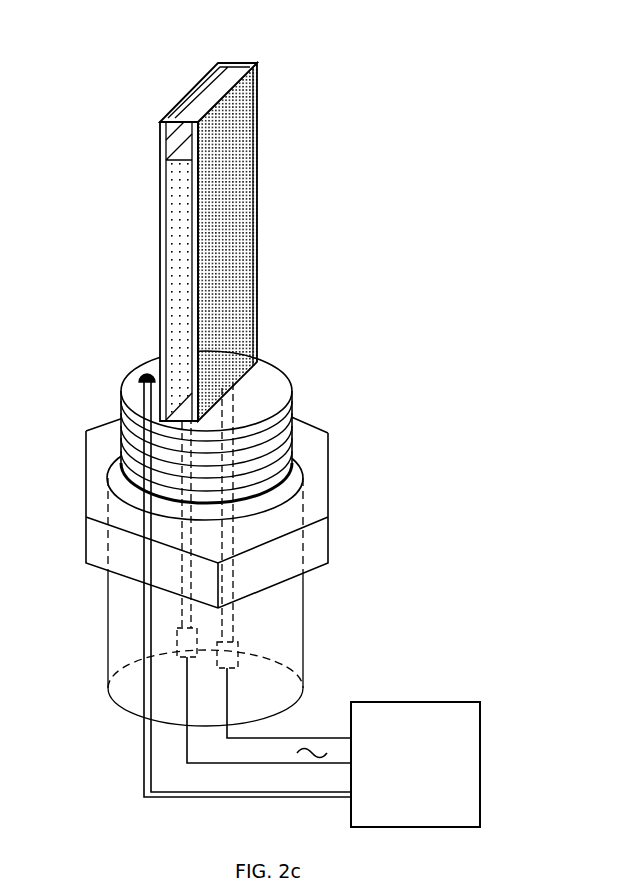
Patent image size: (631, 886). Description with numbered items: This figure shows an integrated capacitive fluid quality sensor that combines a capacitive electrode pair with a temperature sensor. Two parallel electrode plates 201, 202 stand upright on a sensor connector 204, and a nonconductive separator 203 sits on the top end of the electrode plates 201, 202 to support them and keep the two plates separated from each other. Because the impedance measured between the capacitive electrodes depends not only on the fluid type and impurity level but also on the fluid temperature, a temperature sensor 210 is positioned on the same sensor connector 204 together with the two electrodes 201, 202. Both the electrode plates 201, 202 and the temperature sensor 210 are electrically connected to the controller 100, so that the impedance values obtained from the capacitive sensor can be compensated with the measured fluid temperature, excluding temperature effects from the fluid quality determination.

The controller 100 is at (404, 702).
The electrode plate 201 is at (160, 175).
The electrode plate 202 is at (257, 204).
The nonconductive separator 203 is at (232, 73).
The sensor connector 204 is at (328, 503).
The temperature sensor 210 is at (147, 373).